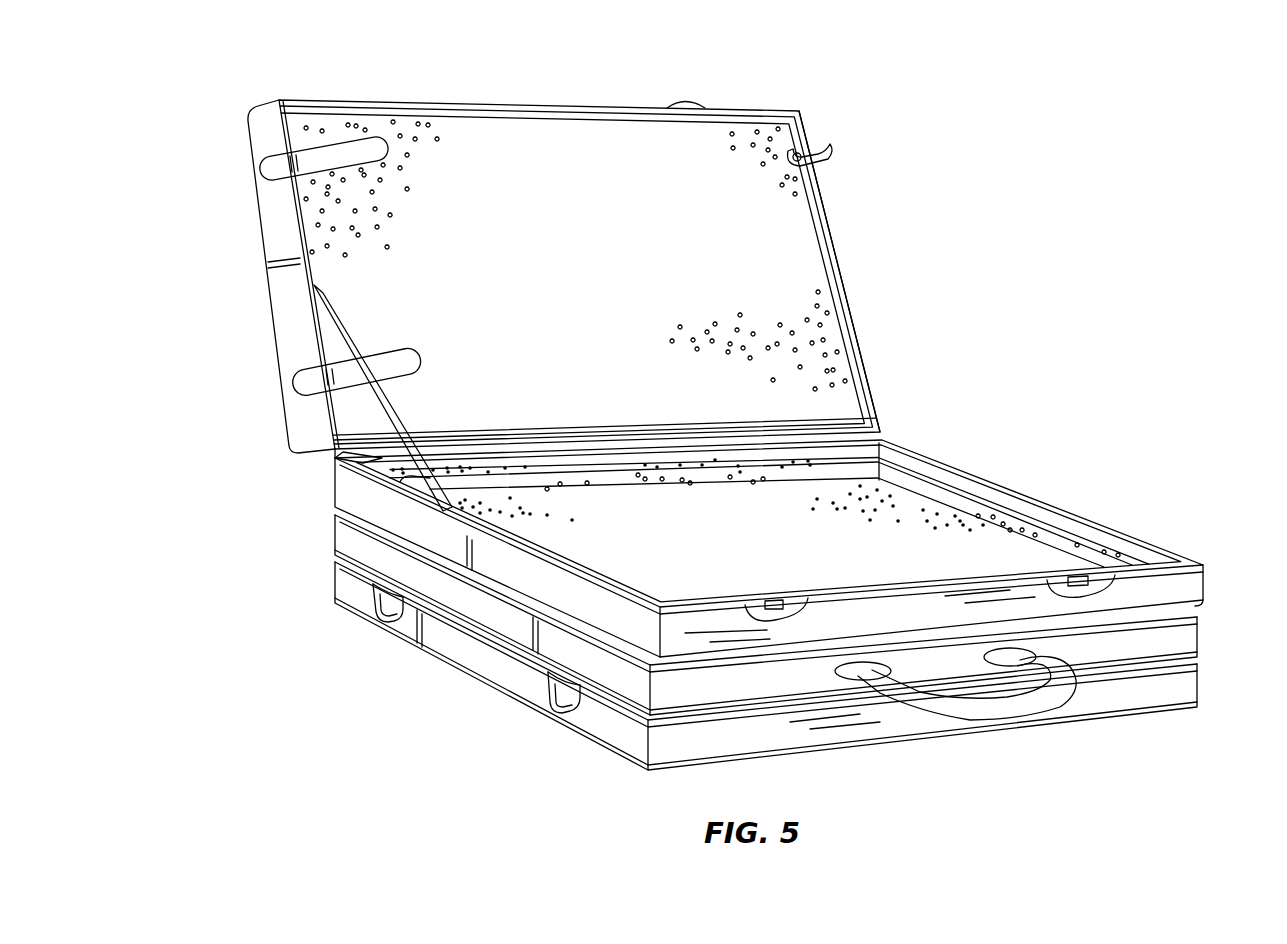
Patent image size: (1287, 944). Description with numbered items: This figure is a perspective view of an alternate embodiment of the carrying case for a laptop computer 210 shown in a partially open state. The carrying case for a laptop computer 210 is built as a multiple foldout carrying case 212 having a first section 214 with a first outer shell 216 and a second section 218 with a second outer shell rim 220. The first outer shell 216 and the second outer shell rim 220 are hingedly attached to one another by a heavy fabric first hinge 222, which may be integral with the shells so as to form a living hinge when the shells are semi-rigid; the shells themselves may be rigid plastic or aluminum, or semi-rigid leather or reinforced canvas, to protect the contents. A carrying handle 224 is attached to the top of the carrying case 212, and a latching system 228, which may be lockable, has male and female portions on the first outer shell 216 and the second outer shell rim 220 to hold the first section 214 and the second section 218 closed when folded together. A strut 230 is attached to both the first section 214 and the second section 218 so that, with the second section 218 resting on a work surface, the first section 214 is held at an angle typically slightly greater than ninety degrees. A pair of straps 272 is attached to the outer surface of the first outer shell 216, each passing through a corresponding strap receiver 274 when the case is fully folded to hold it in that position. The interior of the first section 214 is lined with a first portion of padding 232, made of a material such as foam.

The carrying case for a laptop computer 210 is at (1022, 287).
The multiple foldout carrying case 212 is at (604, 762).
The first section 214 is at (841, 229).
The first outer shell 216 is at (257, 128).
The second section 218 is at (1080, 528).
The second outer shell rim 220 is at (968, 476).
The first hinge 222 is at (383, 457).
The carrying handle 224 is at (1062, 700).
The latching system 228 is at (689, 105).
The strut 230 is at (332, 325).
The first portion of padding 232 is at (770, 158).
The strap 272 is at (341, 152).
The strap receiver 274 is at (382, 605).